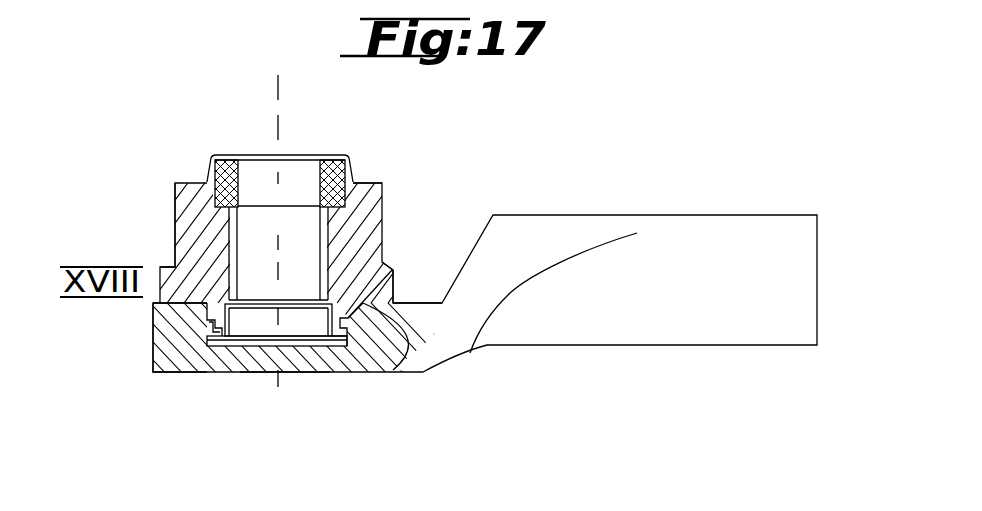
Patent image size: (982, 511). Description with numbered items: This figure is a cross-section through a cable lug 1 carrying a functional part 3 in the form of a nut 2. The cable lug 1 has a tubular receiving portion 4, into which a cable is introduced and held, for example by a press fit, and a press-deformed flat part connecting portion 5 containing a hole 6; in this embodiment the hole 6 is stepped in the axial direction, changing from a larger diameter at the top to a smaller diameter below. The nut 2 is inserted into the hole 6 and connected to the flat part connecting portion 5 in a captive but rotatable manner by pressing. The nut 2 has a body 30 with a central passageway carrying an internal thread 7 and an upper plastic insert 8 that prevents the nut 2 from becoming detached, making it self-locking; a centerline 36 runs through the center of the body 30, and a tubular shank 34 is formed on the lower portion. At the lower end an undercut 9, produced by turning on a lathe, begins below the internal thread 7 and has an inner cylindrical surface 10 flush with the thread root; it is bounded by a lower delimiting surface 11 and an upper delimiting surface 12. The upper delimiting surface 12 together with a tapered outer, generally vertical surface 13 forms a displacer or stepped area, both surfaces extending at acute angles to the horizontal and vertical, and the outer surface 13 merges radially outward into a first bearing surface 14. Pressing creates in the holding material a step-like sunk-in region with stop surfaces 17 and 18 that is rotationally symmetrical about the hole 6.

The cable lug 1 is at (618, 165).
The nut 2 is at (380, 248).
The functional part 3 is at (177, 173).
The tubular receiving portion 4 is at (727, 297).
The flat part connecting portion 5 is at (165, 335).
The hole 6 is at (287, 373).
The internal thread 7 is at (323, 267).
The upper plastic insert 8 is at (225, 157).
The undercut 9 is at (345, 322).
The cylindrical surface 10 is at (302, 318).
The lower delimiting surface 11 is at (343, 344).
The upper delimiting surface 12 is at (382, 268).
The outer generally vertical surface 13 is at (352, 314).
The first bearing surface 14 is at (167, 302).
The stop surface 17 is at (208, 313).
The stop surface 18 is at (210, 323).
The body 30 is at (372, 182).
The tubular shank 34 is at (218, 340).
The centerline 36 is at (280, 120).